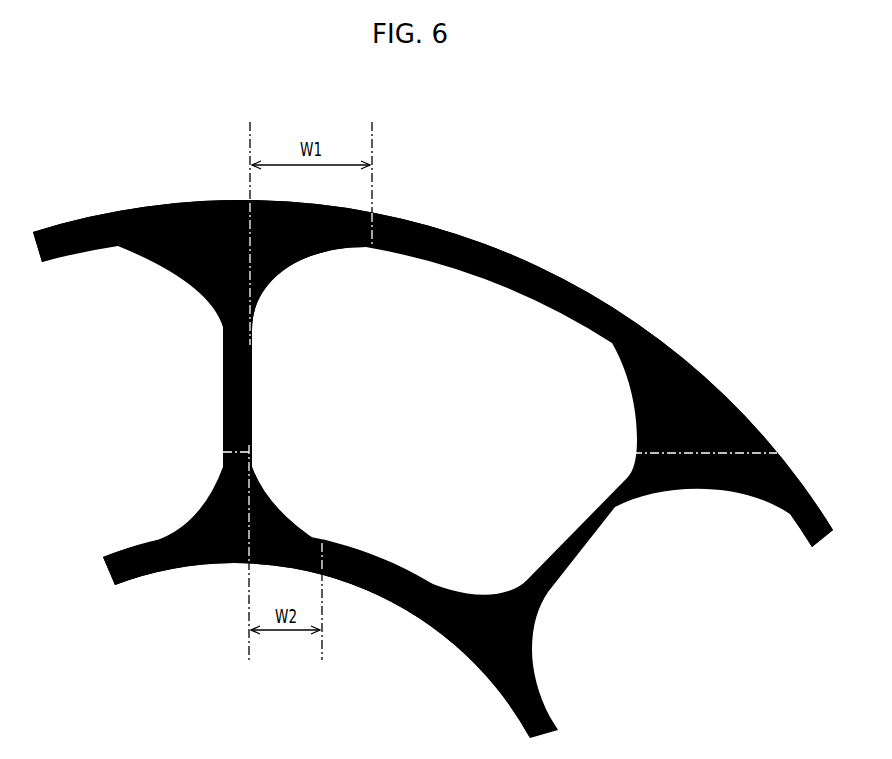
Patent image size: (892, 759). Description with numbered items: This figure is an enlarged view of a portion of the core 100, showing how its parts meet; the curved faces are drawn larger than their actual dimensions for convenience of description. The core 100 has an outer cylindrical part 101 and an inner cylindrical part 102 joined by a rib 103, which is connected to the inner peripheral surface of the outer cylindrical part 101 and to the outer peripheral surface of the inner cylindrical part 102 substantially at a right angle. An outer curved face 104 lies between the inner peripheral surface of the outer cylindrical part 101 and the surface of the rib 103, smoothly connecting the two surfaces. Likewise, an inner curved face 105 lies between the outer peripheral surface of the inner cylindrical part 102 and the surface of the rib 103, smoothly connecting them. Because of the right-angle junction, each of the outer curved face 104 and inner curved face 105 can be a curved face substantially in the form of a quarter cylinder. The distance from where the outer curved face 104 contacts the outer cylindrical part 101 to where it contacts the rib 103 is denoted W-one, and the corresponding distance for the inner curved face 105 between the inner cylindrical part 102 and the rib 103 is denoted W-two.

The core 100 is at (127, 118).
The outer cylindrical part 101 is at (502, 252).
The inner cylindrical part 102 is at (372, 592).
The rib 103 is at (252, 402).
The outer curved face 104 is at (288, 282).
The inner curved face 105 is at (270, 502).